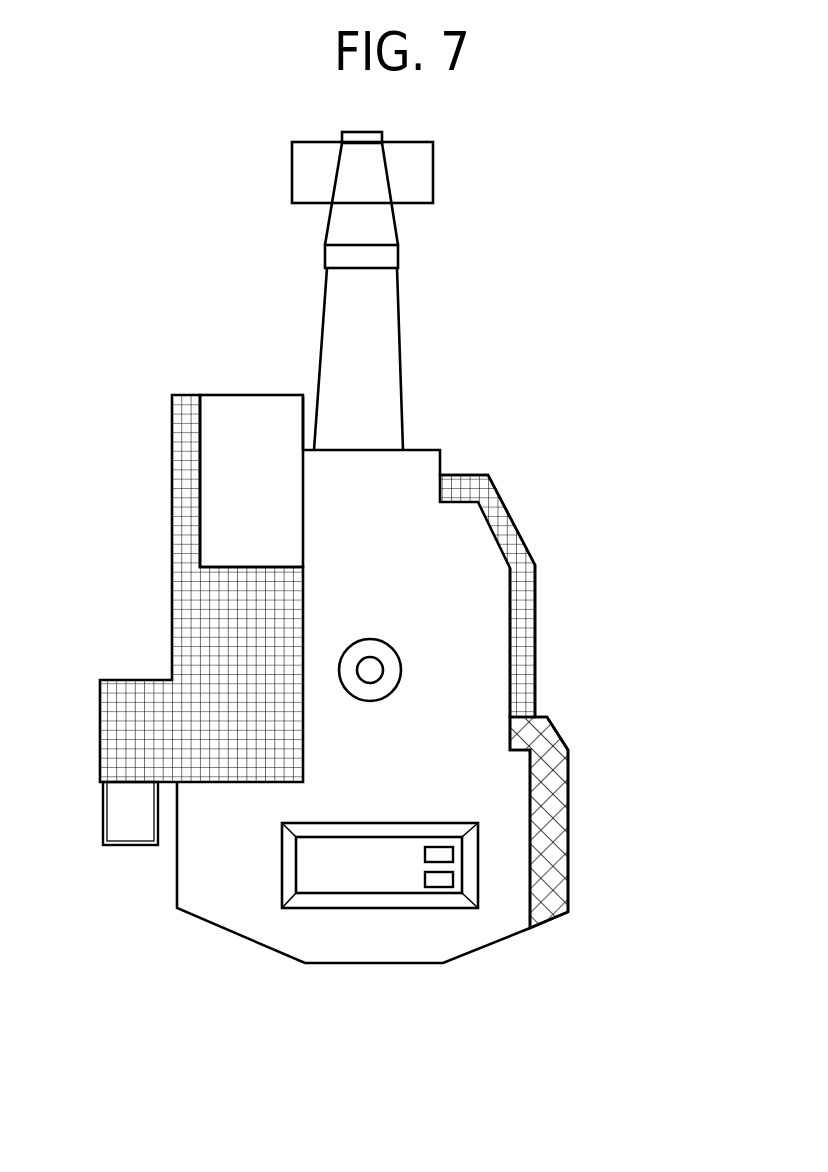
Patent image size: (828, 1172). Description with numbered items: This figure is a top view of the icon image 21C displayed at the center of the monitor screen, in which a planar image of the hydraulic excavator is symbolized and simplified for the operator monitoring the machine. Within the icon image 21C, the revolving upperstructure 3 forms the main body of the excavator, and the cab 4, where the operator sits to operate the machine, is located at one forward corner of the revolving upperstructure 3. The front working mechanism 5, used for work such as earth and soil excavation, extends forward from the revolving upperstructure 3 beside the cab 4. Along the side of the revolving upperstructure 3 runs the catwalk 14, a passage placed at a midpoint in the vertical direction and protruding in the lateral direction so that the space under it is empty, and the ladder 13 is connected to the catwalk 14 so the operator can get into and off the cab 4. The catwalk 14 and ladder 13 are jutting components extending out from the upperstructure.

The revolving upperstructure 3 is at (502, 785).
The cab 4 is at (215, 433).
The front working mechanism 5 is at (337, 300).
The ladder 13 is at (103, 818).
The catwalk 14 is at (172, 598).
The icon image 21C is at (565, 530).